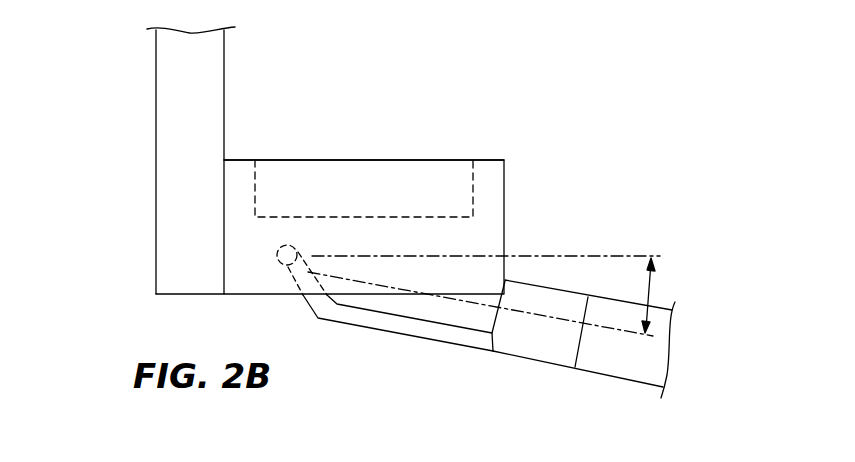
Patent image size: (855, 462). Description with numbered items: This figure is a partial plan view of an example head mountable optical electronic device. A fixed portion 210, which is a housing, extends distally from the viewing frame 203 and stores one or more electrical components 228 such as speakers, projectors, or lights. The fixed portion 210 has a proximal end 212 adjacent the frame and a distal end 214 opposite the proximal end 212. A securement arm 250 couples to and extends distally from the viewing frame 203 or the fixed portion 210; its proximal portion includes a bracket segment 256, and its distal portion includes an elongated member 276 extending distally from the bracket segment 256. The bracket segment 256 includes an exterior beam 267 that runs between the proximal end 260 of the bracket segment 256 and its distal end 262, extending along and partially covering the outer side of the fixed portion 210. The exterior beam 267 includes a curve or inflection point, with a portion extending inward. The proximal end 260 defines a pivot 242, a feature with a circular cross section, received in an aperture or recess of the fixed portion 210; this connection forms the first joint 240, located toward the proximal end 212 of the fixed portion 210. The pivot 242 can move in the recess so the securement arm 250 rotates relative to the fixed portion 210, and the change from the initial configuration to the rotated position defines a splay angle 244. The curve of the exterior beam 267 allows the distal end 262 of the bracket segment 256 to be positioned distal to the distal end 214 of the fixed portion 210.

The viewing frame 203 is at (150, 100).
The fixed portion 210 is at (517, 205).
The proximal end 212 is at (247, 172).
The distal end 214 is at (488, 168).
The electrical components 228 is at (408, 185).
The first joint 240 is at (278, 246).
The pivot 242 is at (278, 259).
The splay angle 244 is at (650, 283).
The securement arm 250 is at (637, 339).
The bracket segment 256 is at (492, 348).
The proximal end 260 is at (290, 268).
The distal end 262 is at (537, 363).
The exterior beam 267 is at (348, 317).
The elongated member 276 is at (617, 367).